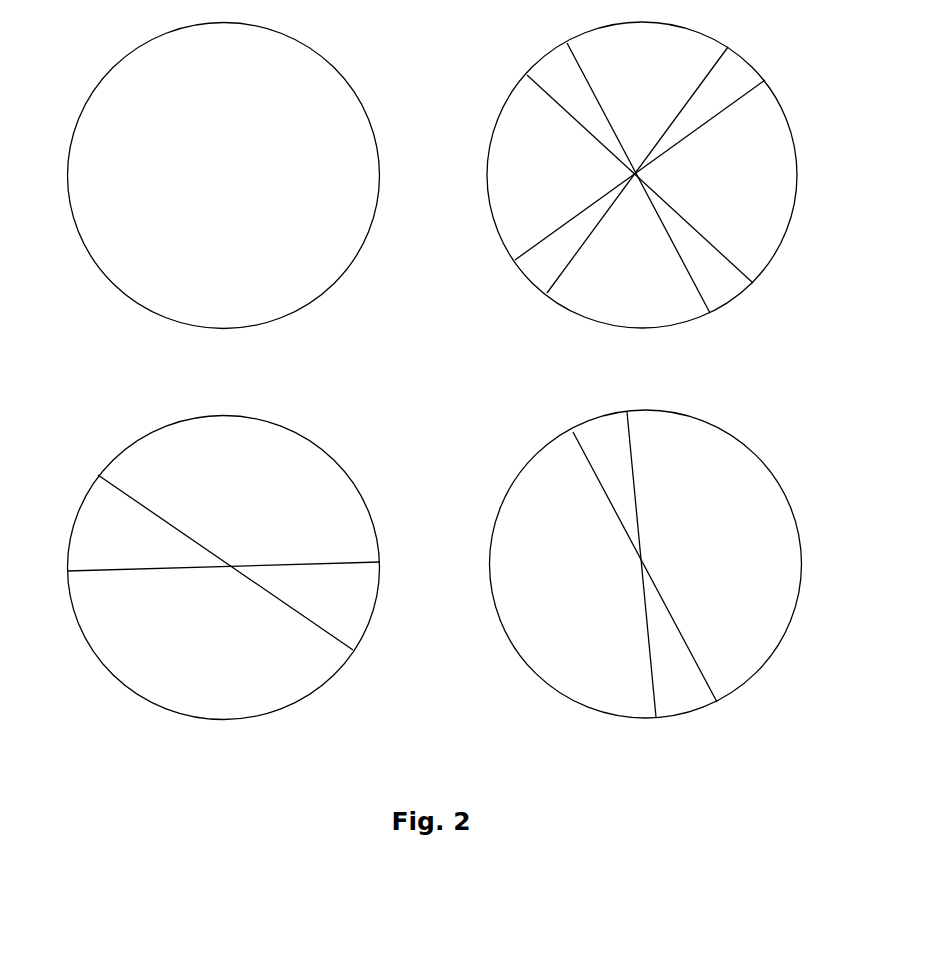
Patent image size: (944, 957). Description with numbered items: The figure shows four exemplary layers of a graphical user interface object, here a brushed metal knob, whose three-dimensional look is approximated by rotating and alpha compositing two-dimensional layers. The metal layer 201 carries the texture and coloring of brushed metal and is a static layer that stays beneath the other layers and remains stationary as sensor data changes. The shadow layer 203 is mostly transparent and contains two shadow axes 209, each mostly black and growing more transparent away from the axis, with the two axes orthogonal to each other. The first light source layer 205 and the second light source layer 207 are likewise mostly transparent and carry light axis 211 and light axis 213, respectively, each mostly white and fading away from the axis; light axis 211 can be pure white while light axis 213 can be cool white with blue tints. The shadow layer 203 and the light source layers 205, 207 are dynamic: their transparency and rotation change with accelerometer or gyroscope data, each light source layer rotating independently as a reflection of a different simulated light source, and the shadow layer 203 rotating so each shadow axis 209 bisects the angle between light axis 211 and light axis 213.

The metal layer 201 is at (224, 193).
The shadow layer 203 is at (682, 183).
The first light source layer 205 is at (200, 584).
The second light source layer 207 is at (635, 564).
The shadow axes 209 is at (738, 75).
The light axis 211 is at (93, 523).
The light axis 213 is at (602, 442).